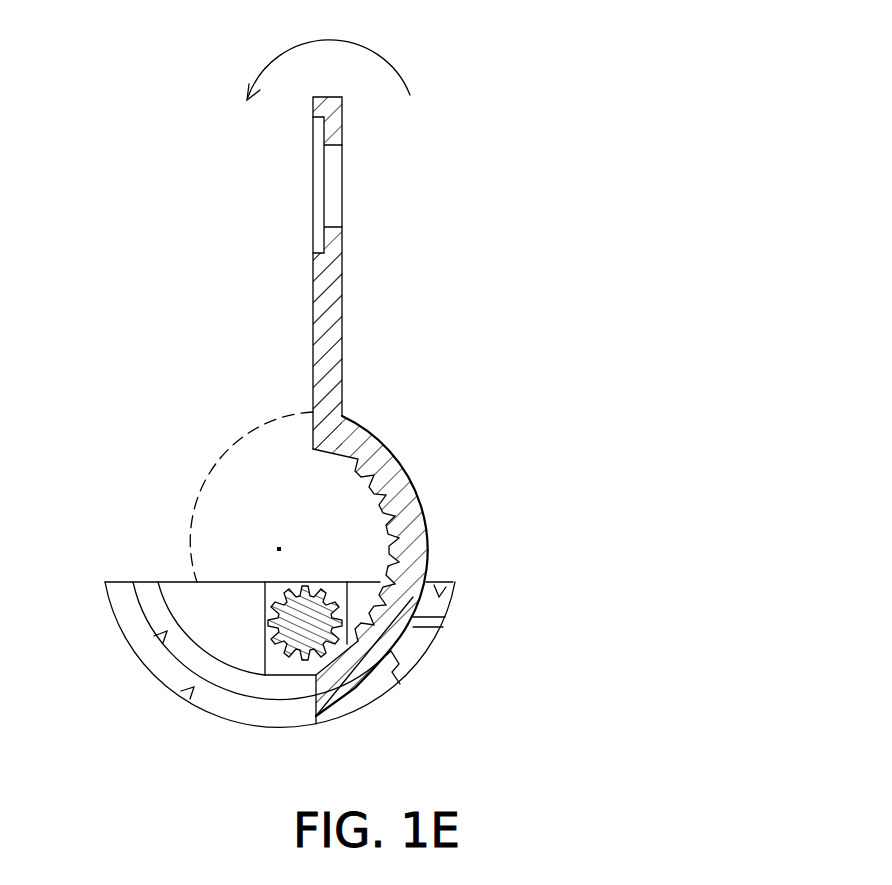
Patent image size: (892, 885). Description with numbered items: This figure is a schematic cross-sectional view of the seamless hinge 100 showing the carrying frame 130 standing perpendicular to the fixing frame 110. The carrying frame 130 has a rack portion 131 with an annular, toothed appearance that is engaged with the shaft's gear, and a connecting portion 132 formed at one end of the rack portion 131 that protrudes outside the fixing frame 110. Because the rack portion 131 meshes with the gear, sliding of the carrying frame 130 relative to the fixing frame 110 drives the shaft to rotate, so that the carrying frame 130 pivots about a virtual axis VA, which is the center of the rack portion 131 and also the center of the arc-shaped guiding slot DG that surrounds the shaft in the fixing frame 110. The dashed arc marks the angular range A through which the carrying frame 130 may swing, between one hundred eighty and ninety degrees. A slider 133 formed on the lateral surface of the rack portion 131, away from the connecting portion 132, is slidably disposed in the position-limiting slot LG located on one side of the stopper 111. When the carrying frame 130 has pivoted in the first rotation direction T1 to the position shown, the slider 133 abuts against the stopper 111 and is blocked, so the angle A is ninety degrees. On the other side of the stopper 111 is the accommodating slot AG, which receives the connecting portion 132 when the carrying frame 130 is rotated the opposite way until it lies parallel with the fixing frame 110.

The seamless hinge 100 is at (362, 394).
The fixing frame 110 is at (181, 598).
The stopper 111 is at (413, 648).
The carrying frame 130 is at (435, 442).
The rack portion 131 is at (416, 488).
The connecting portion 132 is at (332, 321).
The slider 133 is at (352, 688).
The first rotation direction T1 is at (328, 50).
The angular range A is at (251, 495).
The virtual axis VA is at (279, 547).
The accommodating slot AG is at (439, 596).
The guiding slot DG is at (167, 631).
The position-limiting slot LG is at (194, 687).